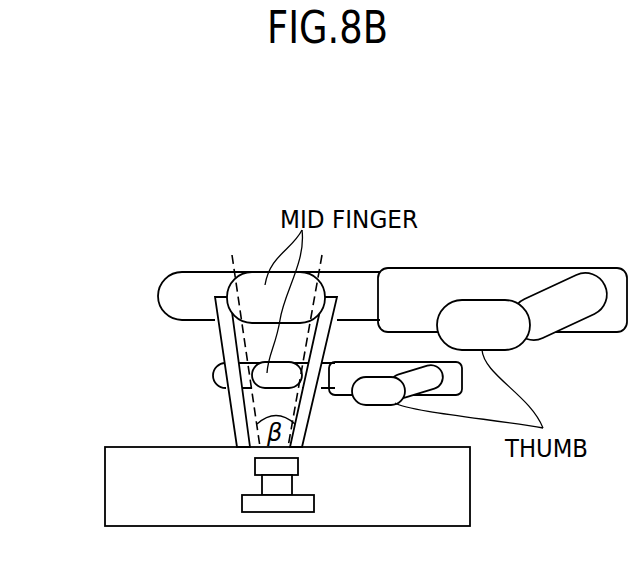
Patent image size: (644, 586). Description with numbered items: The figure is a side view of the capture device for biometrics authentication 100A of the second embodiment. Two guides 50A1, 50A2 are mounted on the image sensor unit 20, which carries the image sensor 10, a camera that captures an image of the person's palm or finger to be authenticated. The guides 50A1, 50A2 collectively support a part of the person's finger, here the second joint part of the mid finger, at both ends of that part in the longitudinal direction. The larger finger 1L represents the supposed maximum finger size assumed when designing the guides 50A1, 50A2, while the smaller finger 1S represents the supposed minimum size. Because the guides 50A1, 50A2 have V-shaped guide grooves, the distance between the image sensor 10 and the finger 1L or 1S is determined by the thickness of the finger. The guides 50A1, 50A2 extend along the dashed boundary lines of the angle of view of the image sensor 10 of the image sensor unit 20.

The capture device for biometrics authentication 100A is at (151, 207).
The person's finger 1L is at (177, 271).
The person's finger 1S is at (213, 375).
The guide 50A1 is at (237, 432).
The guide 50A2 is at (306, 430).
The image sensor unit 20 is at (105, 490).
The image sensor 10 is at (278, 512).